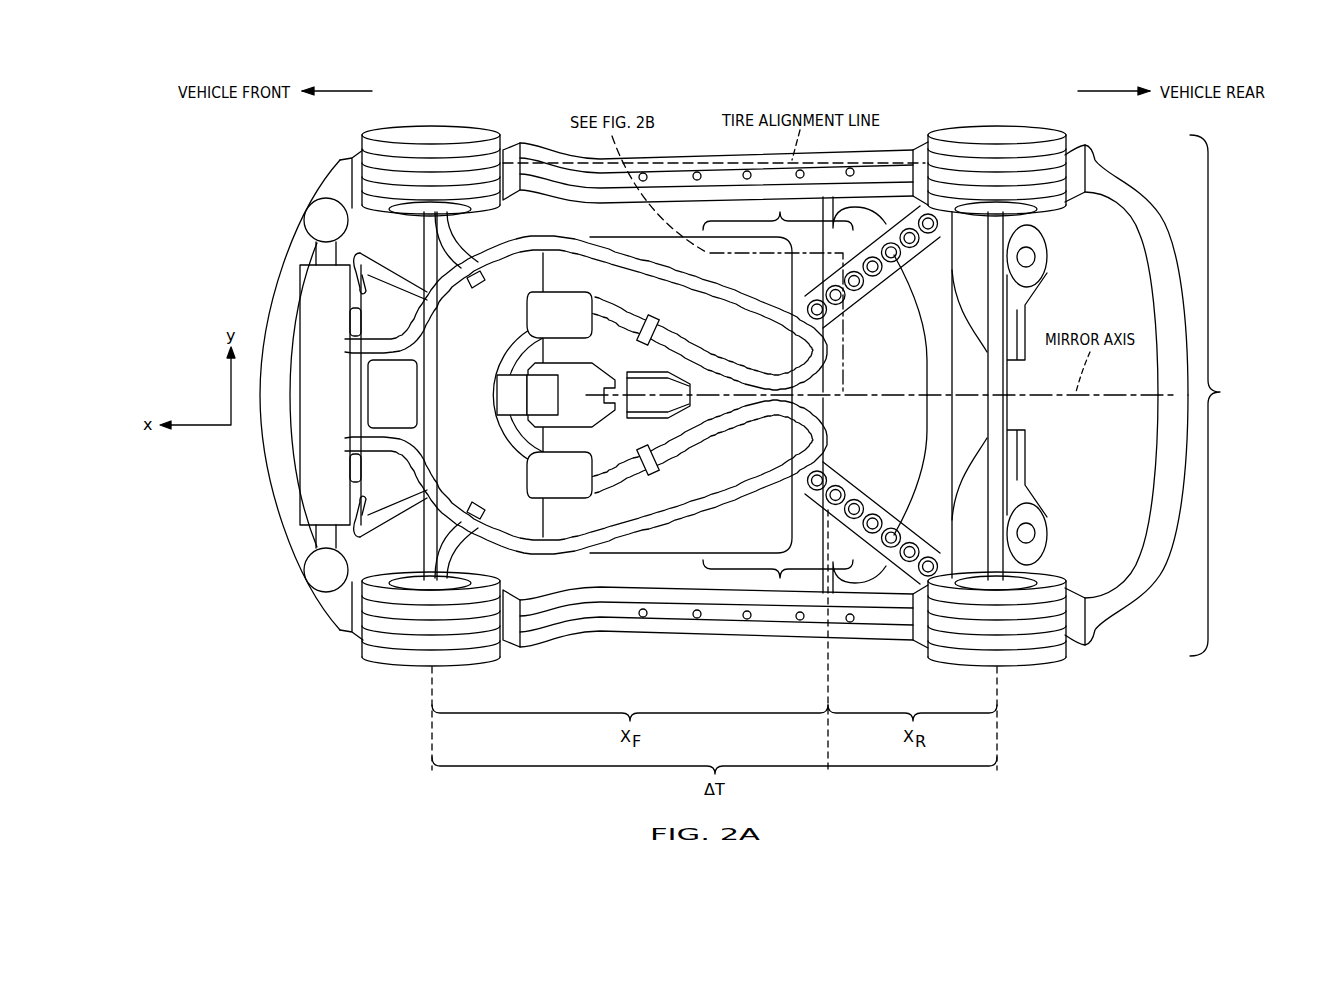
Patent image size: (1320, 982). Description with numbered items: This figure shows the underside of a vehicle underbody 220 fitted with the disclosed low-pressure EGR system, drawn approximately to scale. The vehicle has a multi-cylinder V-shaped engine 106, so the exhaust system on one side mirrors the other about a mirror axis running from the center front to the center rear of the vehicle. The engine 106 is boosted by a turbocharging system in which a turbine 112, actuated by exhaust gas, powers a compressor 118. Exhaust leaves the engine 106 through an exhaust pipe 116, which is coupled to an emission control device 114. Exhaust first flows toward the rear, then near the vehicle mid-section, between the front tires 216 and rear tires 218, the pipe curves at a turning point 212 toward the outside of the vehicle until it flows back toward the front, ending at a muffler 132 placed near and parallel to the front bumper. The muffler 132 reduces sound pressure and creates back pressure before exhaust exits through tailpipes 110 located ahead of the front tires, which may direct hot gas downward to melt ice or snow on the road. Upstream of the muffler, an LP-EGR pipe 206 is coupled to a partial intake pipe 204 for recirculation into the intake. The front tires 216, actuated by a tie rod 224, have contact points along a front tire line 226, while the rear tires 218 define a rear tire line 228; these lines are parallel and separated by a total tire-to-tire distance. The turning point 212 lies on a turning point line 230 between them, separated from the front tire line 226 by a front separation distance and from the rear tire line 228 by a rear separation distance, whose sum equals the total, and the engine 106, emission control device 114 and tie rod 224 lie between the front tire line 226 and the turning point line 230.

The engine 106 is at (590, 387).
The tailpipes 110 is at (338, 229).
The turbine 112 is at (522, 404).
The emission control device 114 is at (572, 324).
The exhaust pipe 116 is at (505, 353).
The compressor 118 is at (553, 404).
The muffler 132 is at (337, 404).
The partial intake pipe 204 is at (364, 293).
The LP-EGR pipe 206 is at (388, 272).
The turning point 212 is at (715, 395).
The front tires 216 is at (450, 130).
The rear tires 218 is at (1015, 130).
The vehicle underbody 220 is at (1224, 395).
The tie rod 224 is at (446, 241).
The front tire line 226 is at (432, 733).
The rear tire line 228 is at (997, 733).
The turning point line 230 is at (828, 733).